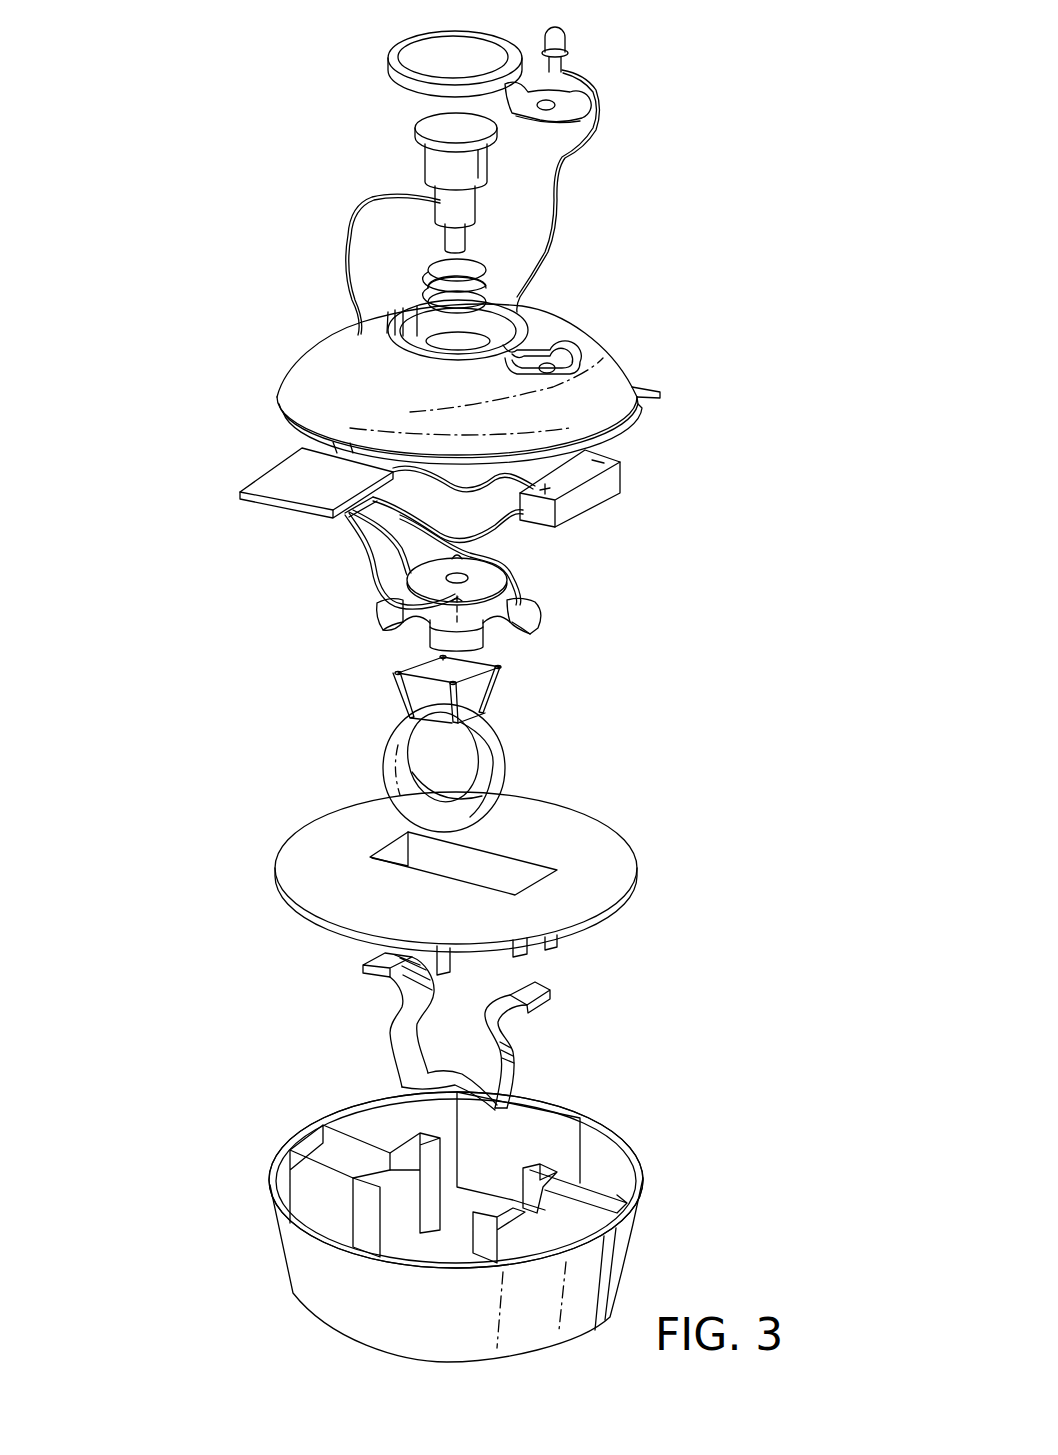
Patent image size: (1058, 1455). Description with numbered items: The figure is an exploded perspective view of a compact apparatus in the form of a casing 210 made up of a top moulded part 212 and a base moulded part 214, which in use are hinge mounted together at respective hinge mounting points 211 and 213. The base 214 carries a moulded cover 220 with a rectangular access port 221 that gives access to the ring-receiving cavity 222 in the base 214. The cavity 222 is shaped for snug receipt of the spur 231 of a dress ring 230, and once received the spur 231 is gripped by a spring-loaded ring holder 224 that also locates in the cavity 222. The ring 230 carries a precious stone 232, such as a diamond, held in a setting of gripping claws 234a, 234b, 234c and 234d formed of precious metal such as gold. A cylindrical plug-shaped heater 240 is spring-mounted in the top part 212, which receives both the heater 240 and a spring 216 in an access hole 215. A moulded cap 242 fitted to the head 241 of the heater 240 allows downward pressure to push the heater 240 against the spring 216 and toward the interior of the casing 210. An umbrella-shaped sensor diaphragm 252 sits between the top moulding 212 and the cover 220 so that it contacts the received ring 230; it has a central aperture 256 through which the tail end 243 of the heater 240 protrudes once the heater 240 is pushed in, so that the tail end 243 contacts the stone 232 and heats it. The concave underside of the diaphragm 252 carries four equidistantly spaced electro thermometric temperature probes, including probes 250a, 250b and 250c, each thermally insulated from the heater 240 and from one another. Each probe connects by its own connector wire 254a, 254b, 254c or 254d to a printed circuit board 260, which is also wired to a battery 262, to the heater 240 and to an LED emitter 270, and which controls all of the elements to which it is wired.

The casing 210 is at (300, 1023).
The hinge mounting point 211 is at (492, 377).
The top moulded part 212 is at (648, 396).
The hinge mounting point 213 is at (472, 1213).
The base moulded part 214 is at (637, 1238).
The access hole 215 is at (360, 320).
The spring 216 is at (438, 262).
The moulded cover 220 is at (491, 880).
The rectangular access port 221 is at (540, 858).
The ring-receiving cavity 222 is at (425, 1250).
The spring-loaded ring holder 224 is at (362, 975).
The dress ring 230 is at (437, 768).
The spur 231 is at (506, 770).
The precious stone 232 is at (454, 705).
The gripping claw 234a is at (505, 675).
The gripping claw 234b is at (460, 690).
The gripping claw 234c is at (395, 678).
The leg 234d is at (440, 657).
The heater 240 is at (487, 166).
The head 241 is at (420, 130).
The moulded cap 242 is at (490, 42).
The tail end 243 is at (466, 235).
The electro thermometric temperature probe 250a is at (545, 628).
The electro thermometric temperature probe 250b is at (478, 654).
The electro thermometric temperature probe 250c is at (368, 636).
The sensor diaphragm 252 is at (498, 567).
The connector wire 254a is at (510, 556).
The connector wire 254b is at (372, 592).
The connector wire 254c is at (370, 543).
The connector wire 254d is at (342, 520).
The central aperture 256 is at (462, 572).
The printed circuit board 260 is at (245, 486).
The battery 262 is at (624, 469).
The LED emitter 270 is at (572, 34).